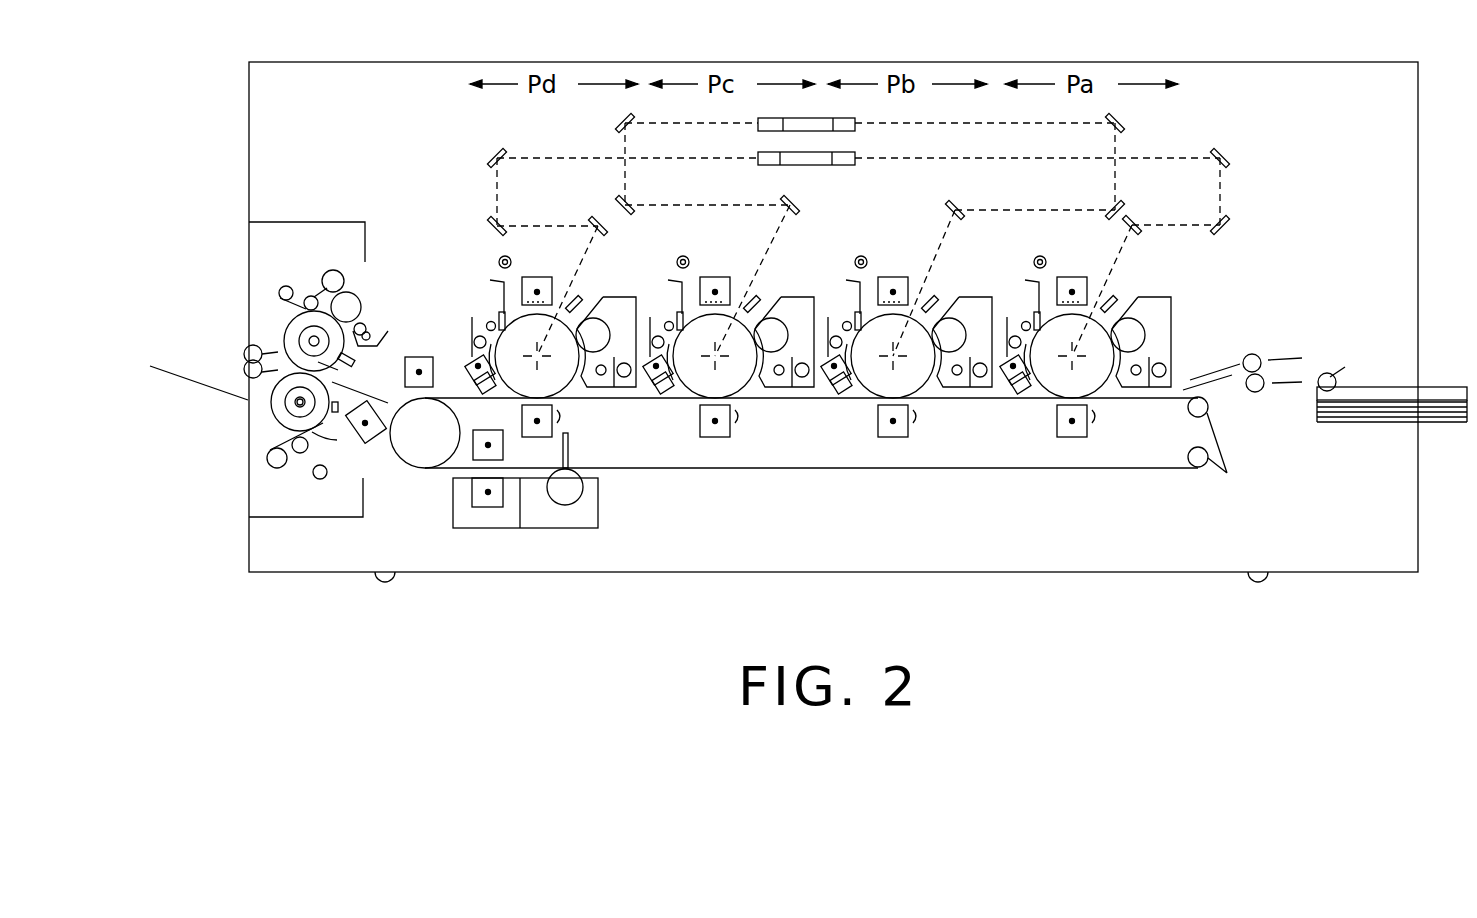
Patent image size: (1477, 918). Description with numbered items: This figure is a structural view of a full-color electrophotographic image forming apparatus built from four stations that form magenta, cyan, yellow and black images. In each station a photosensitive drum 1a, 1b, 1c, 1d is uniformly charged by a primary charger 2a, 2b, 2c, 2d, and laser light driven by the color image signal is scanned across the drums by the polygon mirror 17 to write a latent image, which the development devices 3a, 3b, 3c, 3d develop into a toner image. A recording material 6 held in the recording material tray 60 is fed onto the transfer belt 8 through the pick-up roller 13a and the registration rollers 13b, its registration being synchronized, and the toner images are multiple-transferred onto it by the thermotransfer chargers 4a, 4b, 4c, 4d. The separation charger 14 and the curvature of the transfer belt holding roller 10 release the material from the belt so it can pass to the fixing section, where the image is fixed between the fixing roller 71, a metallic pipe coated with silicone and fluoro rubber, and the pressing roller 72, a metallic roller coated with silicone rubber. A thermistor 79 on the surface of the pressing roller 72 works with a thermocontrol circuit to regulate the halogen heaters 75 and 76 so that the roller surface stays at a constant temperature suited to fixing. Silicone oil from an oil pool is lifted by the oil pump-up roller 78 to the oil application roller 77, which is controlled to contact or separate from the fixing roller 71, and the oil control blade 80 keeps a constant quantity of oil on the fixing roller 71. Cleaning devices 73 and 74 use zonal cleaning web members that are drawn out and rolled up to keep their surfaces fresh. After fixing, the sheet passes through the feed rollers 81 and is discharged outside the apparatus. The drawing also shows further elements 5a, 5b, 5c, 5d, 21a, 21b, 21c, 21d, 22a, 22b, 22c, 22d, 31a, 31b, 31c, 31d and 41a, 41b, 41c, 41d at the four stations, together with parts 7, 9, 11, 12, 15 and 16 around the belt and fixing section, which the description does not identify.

The photosensitive drum 1a is at (1070, 390).
The photosensitive drum 1b is at (912, 373).
The photosensitive drum 1c is at (731, 373).
The photosensitive drum 1d is at (563, 370).
The primary charger 2a is at (1089, 271).
The primary charger 2b is at (908, 269).
The primary charger 2c is at (732, 269).
The primary charger 2d is at (549, 266).
The development device 3a is at (1177, 316).
The development device 3b is at (975, 301).
The development device 3c is at (792, 301).
The development device 3d is at (613, 302).
The thermotransfer charger 4a is at (1078, 473).
The thermotransfer charger 4b is at (896, 473).
The thermotransfer charger 4c is at (718, 473).
The thermotransfer charger 4d is at (606, 467).
The eraser lamp 5a is at (1029, 251).
The eraser lamp 5b is at (851, 262).
The eraser lamp 5c is at (677, 269).
The eraser lamp 5d is at (469, 293).
The recording material 6 is at (1436, 404).
The recording material tray 60 is at (1448, 424).
The fixing device 7 is at (300, 216).
The transfer belt 8 is at (818, 470).
The belt cleaning device 9 is at (598, 512).
The transfer belt holding roller 10 is at (418, 452).
The driven roller 11 is at (1216, 454).
The sensors 12 is at (473, 497).
The pick-up roller 13a is at (1325, 374).
The registration rollers 13b is at (1243, 375).
The separation charger 14 is at (420, 356).
The sensor 15 is at (368, 436).
The cleaning roller 16 is at (563, 506).
The polygon mirror 17 is at (855, 131).
The reflecting mirror 21a is at (1066, 242).
The reflecting mirror 21b is at (895, 231).
The reflecting mirror 21c is at (721, 241).
The reflecting mirror 21d is at (469, 241).
The mirror 22a is at (1145, 275).
The mirror 22b is at (958, 276).
The mirror 22c is at (783, 275).
The mirror 22d is at (603, 277).
The cleaner 31a is at (1012, 383).
The cleaner 31b is at (842, 381).
The cleaner 31c is at (672, 381).
The cleaner 31d is at (511, 392).
The transfer roller 41a is at (1114, 434).
The transfer roller 41b is at (934, 437).
The transfer roller 41c is at (754, 437).
The transfer roller 41d is at (588, 430).
The fixing roller 71 is at (304, 305).
The pressing roller 72 is at (268, 404).
The cleaning device 73 is at (290, 286).
The cleaning device 74 is at (305, 460).
The halogen heater 75 is at (290, 324).
The halogen heater 76 is at (293, 410).
The oil application roller 77 is at (360, 294).
The oil pump-up roller 78 is at (382, 328).
The thermistor 79 is at (342, 445).
The oil control blade 80 is at (352, 364).
The feed rollers 81 is at (240, 366).